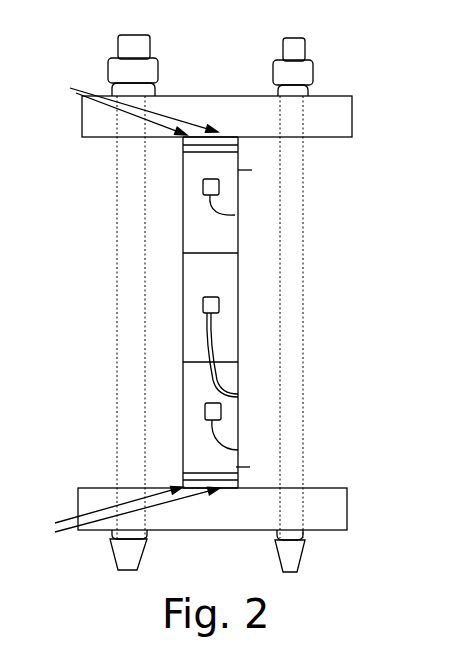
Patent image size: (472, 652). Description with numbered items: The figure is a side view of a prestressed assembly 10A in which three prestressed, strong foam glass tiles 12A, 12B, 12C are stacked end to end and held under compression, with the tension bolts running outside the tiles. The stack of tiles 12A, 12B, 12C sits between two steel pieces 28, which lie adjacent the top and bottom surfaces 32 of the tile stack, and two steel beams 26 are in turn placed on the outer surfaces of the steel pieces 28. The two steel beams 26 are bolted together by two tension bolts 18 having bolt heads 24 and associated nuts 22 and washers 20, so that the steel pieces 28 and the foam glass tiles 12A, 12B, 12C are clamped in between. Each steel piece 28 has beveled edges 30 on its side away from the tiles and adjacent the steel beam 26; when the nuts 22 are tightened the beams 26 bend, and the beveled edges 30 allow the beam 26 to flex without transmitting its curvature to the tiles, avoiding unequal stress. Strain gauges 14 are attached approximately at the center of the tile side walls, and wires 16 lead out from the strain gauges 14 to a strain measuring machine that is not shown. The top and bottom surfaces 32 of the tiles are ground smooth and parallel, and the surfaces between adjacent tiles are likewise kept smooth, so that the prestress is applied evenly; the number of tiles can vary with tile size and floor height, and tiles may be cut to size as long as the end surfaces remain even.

The prestressed assembly 10A is at (79, 317).
The prestressed foam glass tile 12A is at (191, 207).
The prestressed foam glass tile 12B is at (190, 274).
The prestressed foam glass tile 12C is at (190, 434).
The strain gauge 14 is at (220, 302).
The wires 16 is at (210, 350).
The tension bolt 18 is at (133, 247).
The washer 20 is at (150, 92).
The nut 22 is at (120, 70).
The bolt head 24 is at (127, 555).
The steel beam 26 is at (323, 126).
The steel piece 28 is at (244, 150).
The beveled edge 30 is at (121, 309).
The top and bottom surface 32 is at (251, 173).